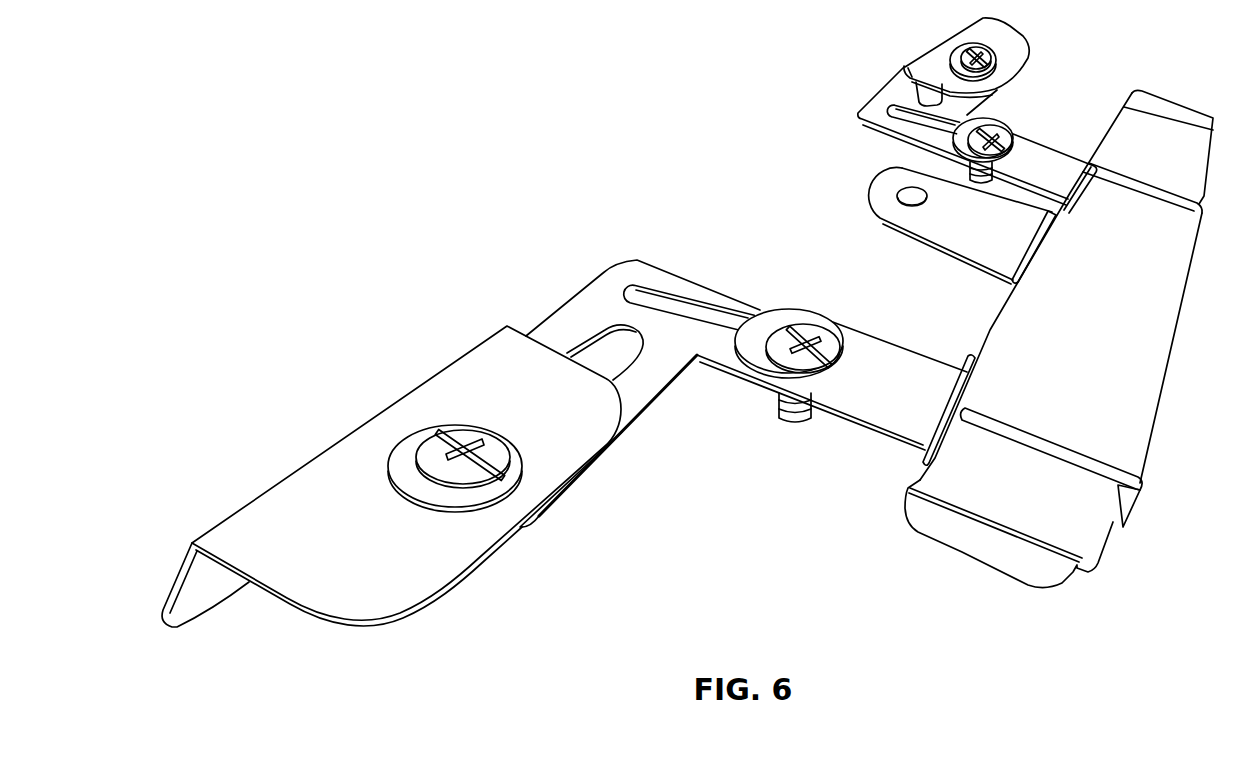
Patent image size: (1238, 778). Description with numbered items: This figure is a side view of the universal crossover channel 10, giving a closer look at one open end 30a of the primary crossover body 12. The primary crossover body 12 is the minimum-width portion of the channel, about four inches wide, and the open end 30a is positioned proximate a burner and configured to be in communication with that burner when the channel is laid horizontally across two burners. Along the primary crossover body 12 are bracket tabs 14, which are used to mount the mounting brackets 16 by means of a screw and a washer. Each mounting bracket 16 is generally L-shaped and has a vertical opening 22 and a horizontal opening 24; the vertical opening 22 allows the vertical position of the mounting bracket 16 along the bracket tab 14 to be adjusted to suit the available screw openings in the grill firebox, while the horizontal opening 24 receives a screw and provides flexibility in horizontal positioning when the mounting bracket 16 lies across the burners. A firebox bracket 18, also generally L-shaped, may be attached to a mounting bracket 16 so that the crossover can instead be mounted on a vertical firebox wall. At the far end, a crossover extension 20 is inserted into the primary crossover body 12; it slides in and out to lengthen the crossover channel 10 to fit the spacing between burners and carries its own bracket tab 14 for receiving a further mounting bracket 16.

The universal crossover channel 10 is at (463, 108).
The primary crossover body 12 is at (1089, 317).
The bracket tab 14 is at (866, 396).
The mounting bracket 16 is at (633, 271).
The firebox bracket 18 is at (283, 497).
The crossover extension 20 is at (1147, 141).
The vertical opening 22 is at (701, 312).
The horizontal opening 24 is at (595, 347).
The open end 30a is at (943, 525).